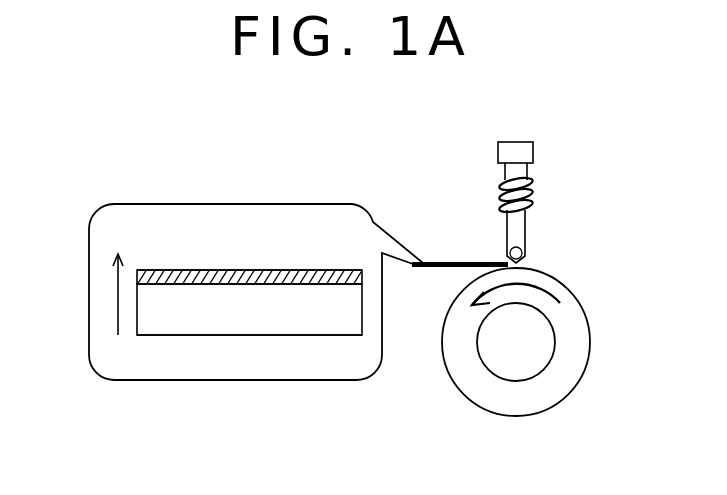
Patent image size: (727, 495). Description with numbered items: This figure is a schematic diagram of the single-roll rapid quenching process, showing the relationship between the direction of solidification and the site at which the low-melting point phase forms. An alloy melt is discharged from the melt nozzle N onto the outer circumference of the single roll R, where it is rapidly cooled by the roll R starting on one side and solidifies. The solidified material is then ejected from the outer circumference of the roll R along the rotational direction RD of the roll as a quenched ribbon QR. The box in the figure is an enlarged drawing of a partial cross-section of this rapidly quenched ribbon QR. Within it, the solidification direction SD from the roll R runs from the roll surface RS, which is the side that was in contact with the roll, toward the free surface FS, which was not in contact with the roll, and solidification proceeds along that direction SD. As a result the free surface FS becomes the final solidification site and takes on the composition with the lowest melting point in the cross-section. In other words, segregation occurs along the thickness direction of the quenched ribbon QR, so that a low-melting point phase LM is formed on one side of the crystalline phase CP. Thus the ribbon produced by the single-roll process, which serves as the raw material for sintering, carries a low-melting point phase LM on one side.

The solidification direction SD is at (117, 298).
The low-melting point phase LM is at (248, 270).
The crystalline phase CP is at (232, 317).
The free surface FS is at (343, 270).
The roll surface RS is at (335, 337).
The quenched ribbon QR is at (188, 262).
The melt nozzle N is at (527, 228).
The single roll R is at (580, 377).
The rotational direction RD is at (550, 295).